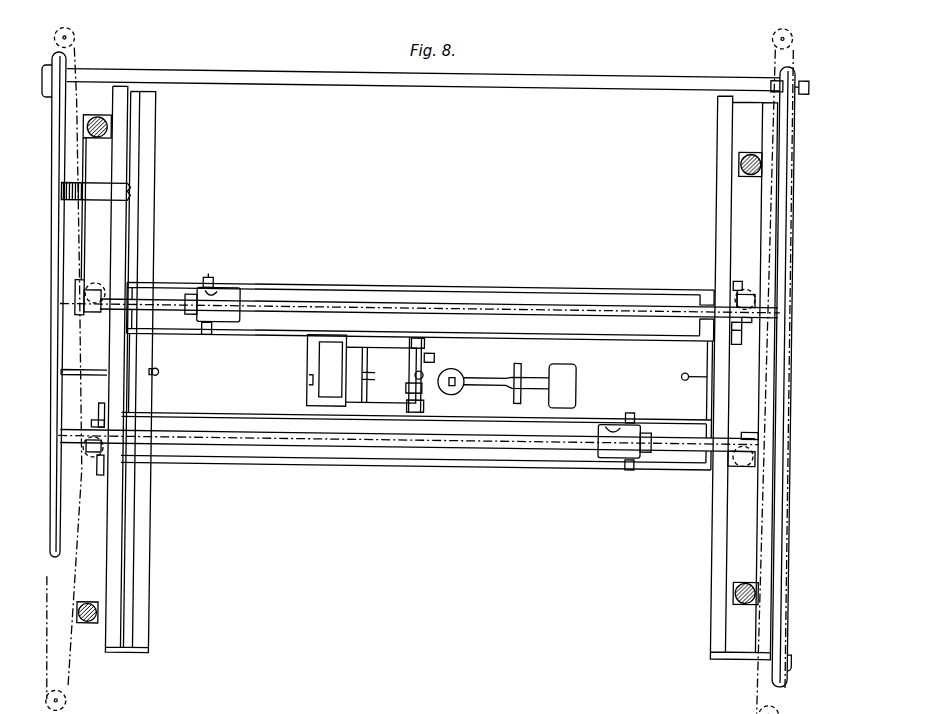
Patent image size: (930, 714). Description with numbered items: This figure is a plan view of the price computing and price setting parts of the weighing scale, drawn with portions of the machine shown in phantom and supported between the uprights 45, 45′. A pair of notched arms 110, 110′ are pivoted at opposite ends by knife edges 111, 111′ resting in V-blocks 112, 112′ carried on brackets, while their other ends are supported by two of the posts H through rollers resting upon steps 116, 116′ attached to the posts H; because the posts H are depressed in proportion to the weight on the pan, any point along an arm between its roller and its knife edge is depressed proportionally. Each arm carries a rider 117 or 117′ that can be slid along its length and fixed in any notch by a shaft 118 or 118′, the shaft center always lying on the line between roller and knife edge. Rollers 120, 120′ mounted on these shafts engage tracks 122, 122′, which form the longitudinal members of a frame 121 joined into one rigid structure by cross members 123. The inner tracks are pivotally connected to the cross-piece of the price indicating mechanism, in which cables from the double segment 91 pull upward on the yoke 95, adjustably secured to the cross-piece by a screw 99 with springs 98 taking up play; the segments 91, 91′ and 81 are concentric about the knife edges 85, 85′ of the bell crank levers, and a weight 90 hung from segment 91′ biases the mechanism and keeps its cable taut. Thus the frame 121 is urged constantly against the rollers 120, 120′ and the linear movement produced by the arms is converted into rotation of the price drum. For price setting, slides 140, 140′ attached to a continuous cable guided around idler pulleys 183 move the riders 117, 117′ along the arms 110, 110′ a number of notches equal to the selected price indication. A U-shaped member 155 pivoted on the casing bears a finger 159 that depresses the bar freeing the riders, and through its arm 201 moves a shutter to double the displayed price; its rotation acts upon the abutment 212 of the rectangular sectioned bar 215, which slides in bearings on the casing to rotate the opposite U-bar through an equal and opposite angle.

The left upright column 45 is at (118, 652).
The right upright column 45′ is at (720, 641).
The segment 81 is at (380, 383).
The knife edge 85 is at (318, 360).
The knife edge 85′ is at (522, 365).
The weight 90 is at (443, 389).
The segment 91 is at (418, 340).
The segment 91′ is at (453, 390).
The yoke 95 is at (424, 383).
The spring 98 is at (435, 354).
The screw 99 is at (416, 371).
The notched arm 110 is at (567, 299).
The notched arm 110′ is at (552, 443).
The knife edge 111 is at (732, 330).
The knife edge 111′ is at (102, 475).
The V-block 112 is at (733, 280).
The V-block 112′ is at (93, 417).
The step 116 is at (753, 424).
The step 116′ is at (90, 315).
The rider 117 is at (189, 294).
The rider 117′ is at (650, 446).
The shaft 118 is at (213, 281).
The shaft 118′ is at (627, 410).
The roller 120 is at (219, 311).
The roller 120′ is at (636, 410).
The frame 121 is at (425, 334).
The track 122 is at (283, 328).
The track 122′ is at (480, 416).
The cross member 123 is at (130, 391).
The slide 140 is at (220, 297).
The carrier 140′ is at (606, 452).
The U-shaped member 155 is at (54, 349).
The finger 159 is at (62, 433).
The idler pulley 183 is at (72, 40).
The arm 201 is at (93, 370).
The abutment 212 is at (764, 76).
The rectangular sectioned bar 215 is at (623, 78).
The post H is at (91, 115).